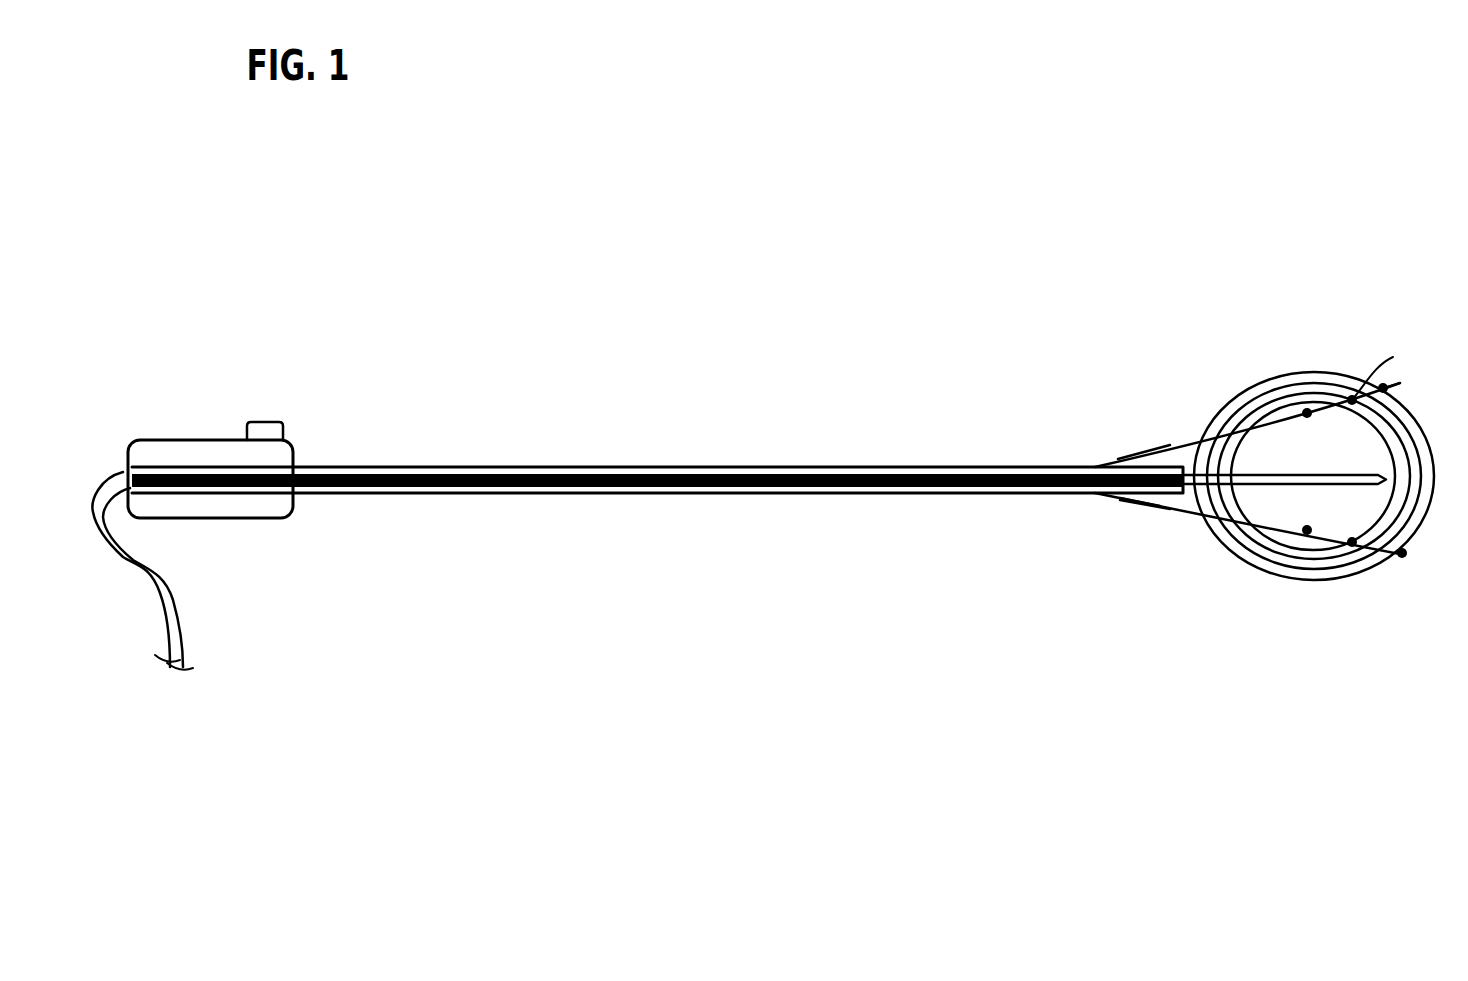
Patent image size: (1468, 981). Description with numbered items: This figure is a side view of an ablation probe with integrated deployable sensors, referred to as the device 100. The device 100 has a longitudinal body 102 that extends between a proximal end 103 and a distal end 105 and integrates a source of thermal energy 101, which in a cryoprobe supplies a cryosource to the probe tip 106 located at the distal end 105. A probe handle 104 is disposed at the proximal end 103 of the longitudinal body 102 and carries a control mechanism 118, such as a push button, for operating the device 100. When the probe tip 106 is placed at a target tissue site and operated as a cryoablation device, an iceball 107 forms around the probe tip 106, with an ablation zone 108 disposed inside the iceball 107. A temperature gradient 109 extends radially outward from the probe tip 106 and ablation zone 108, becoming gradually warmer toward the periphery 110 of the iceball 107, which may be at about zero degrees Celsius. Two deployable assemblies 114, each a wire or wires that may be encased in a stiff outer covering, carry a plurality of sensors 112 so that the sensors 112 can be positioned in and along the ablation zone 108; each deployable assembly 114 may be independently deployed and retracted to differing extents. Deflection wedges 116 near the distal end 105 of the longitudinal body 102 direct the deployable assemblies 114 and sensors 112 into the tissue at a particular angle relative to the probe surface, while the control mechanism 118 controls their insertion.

The device 100 is at (708, 313).
The source of thermal energy 101 is at (158, 583).
The longitudinal body 102 is at (510, 497).
The proximal end 103 is at (267, 720).
The probe handle 104 is at (250, 518).
The distal end 105 is at (1295, 720).
The probe tip 106 is at (1383, 478).
The iceball 107 is at (1232, 402).
The ablation zone 108 is at (1327, 457).
The temperature gradient 109 is at (1232, 568).
The periphery 110 is at (1313, 580).
The sensors 112 is at (1383, 388).
The deployable assembly 114 is at (1175, 446).
The deflection wedges 116 is at (1125, 497).
The control mechanism 118 is at (258, 425).